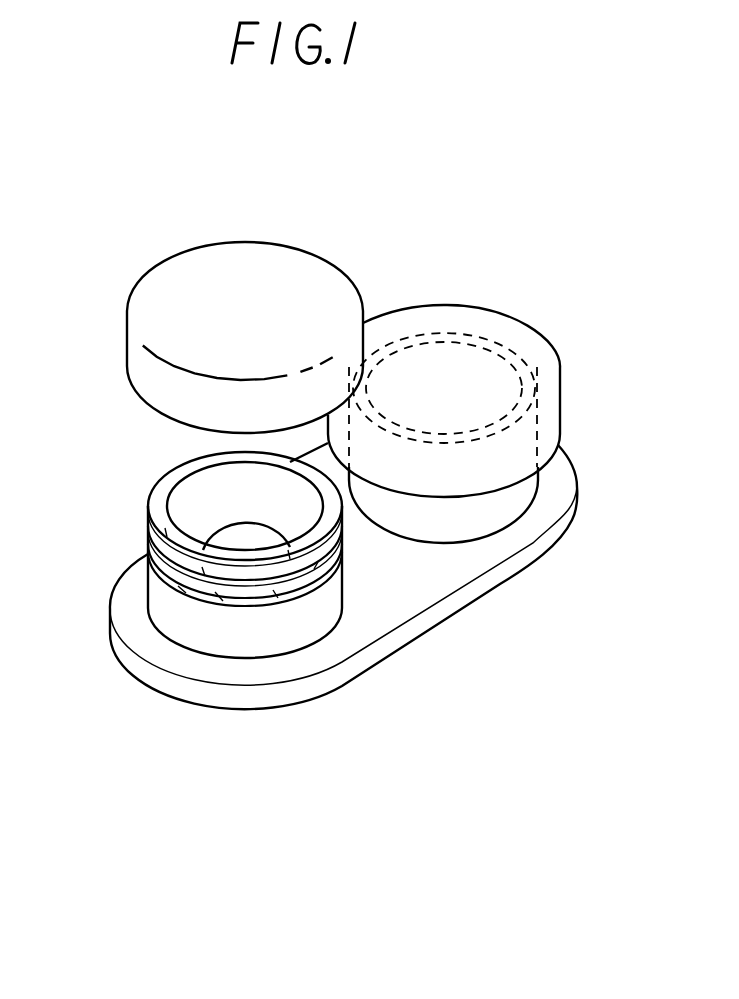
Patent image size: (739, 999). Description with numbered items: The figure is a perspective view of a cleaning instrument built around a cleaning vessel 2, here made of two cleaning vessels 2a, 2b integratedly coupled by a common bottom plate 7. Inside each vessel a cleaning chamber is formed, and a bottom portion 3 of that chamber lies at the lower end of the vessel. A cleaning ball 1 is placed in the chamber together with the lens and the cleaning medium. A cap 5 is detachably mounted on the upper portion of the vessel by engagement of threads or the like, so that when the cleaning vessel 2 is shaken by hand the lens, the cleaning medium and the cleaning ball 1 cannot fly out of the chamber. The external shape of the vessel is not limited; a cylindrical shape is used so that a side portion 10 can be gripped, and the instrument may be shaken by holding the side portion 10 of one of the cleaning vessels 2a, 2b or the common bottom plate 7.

The cleaning ball 1 is at (228, 534).
The cleaning vessel 2 is at (376, 577).
The cleaning vessel 2a is at (355, 635).
The cleaning vessel 2b is at (454, 532).
The bottom portion 3 is at (183, 602).
The cap 5 is at (170, 298).
The bottom plate 7 is at (374, 576).
The side portion 10 is at (490, 401).